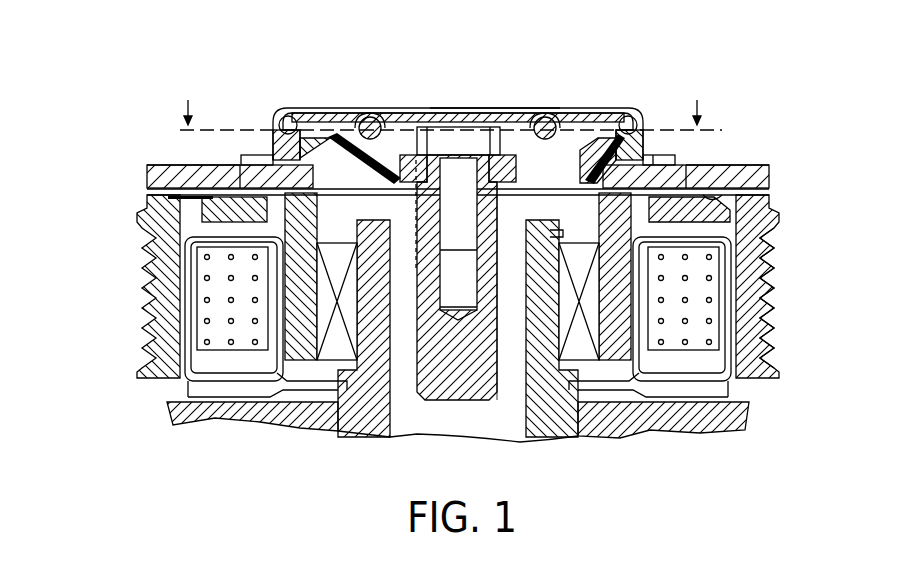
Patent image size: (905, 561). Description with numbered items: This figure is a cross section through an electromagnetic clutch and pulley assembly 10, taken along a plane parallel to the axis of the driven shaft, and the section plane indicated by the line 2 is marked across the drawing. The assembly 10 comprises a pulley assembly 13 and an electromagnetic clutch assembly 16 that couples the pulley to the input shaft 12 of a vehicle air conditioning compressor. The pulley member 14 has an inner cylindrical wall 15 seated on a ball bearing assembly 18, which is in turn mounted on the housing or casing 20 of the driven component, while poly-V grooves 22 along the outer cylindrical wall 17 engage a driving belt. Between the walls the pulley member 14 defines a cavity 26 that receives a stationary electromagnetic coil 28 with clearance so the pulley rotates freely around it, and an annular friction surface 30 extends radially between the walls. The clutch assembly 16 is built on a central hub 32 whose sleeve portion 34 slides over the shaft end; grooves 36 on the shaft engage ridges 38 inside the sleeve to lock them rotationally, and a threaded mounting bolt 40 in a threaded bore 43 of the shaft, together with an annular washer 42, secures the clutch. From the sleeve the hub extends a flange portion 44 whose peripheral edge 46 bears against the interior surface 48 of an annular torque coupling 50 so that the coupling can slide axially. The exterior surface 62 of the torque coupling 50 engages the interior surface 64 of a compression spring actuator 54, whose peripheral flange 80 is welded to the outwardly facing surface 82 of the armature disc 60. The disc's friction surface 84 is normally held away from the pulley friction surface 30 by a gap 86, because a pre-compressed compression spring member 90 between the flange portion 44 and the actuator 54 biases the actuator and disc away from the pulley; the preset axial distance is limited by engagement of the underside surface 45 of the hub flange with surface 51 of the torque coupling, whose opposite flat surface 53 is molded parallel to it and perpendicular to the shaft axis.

The electromagnetic clutch and pulley assembly 10 is at (828, 85).
The section line 2 is at (443, 111).
The input shaft 12 is at (423, 385).
The pulley assembly 13 is at (126, 372).
The pulley member 14 is at (760, 205).
The inner cylindrical wall 15 is at (612, 357).
The electromagnetic clutch assembly 16 is at (763, 157).
The outer cylindrical wall 17 is at (755, 385).
The ball bearing assembly 18 is at (333, 347).
The housing or casing 20 is at (588, 424).
The poly-V grooves 22 is at (762, 297).
The cavity 26 is at (195, 231).
The electromagnetic coil 28 is at (217, 311).
The annular friction surface 30 is at (722, 198).
The central hub 32 is at (395, 170).
The sleeve portion 34 is at (552, 234).
The grooves 36 is at (507, 236).
The ridges 38 is at (400, 263).
The threaded mounting bolt 40 is at (456, 127).
The annular washer 42 is at (420, 150).
The threaded bore 43 is at (410, 312).
The flange portion 44 is at (358, 109).
The underside surface 45 is at (316, 128).
The peripheral edge 46 is at (278, 118).
The interior surface 48 is at (560, 128).
The torque coupling 50 is at (628, 130).
The surface of torque coupling 51 is at (415, 209).
The flat surface 53 is at (150, 173).
The compression spring actuator 54 is at (548, 110).
The armature disc 60 is at (722, 170).
The annular exterior surface 62 is at (268, 133).
The annular interior surface 64 is at (649, 151).
The peripheral flange 80 is at (661, 157).
The axially outwardly facing surface 82 is at (165, 165).
The annular friction surface 84 is at (757, 191).
The gap 86 is at (147, 192).
The compression spring member 90 is at (374, 122).